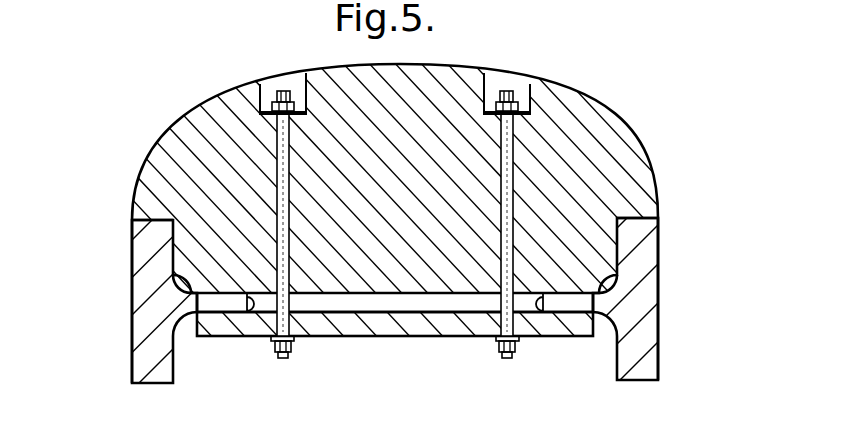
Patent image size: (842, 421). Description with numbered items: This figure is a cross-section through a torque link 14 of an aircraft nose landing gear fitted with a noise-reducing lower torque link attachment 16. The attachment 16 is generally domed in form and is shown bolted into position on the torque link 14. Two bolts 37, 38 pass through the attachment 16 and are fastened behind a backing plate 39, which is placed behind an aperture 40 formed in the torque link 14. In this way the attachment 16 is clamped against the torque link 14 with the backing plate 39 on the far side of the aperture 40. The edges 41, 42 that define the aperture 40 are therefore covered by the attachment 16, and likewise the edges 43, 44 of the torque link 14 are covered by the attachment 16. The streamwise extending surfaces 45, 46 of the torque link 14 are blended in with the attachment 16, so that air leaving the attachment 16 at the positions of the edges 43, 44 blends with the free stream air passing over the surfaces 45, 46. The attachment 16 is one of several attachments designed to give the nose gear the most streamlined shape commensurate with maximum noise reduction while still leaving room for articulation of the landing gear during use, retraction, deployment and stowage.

The torque link 14 is at (658, 257).
The lower torque link attachment 16 is at (605, 113).
The bolt 37 is at (263, 85).
The bolt 38 is at (510, 93).
The backing plate 39 is at (350, 336).
The aperture 40 is at (453, 300).
The edge 41 is at (246, 298).
The edge 42 is at (541, 297).
The edge 43 is at (133, 220).
The edge 44 is at (658, 217).
The streamwise extending surface 45 is at (132, 293).
The streamwise extending surface 46 is at (658, 297).